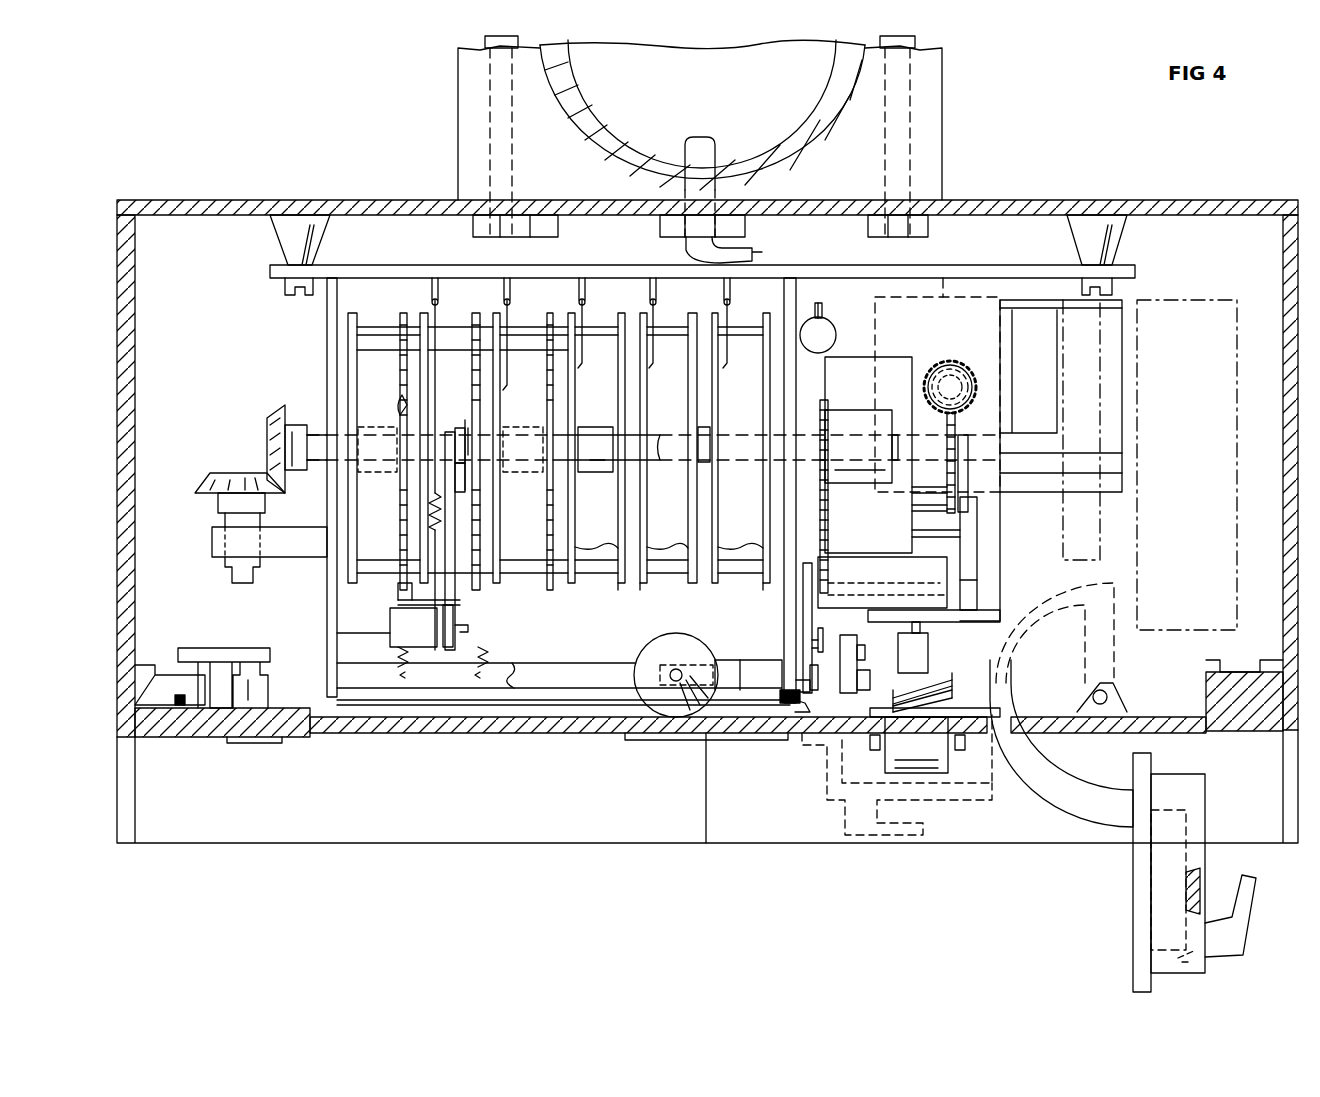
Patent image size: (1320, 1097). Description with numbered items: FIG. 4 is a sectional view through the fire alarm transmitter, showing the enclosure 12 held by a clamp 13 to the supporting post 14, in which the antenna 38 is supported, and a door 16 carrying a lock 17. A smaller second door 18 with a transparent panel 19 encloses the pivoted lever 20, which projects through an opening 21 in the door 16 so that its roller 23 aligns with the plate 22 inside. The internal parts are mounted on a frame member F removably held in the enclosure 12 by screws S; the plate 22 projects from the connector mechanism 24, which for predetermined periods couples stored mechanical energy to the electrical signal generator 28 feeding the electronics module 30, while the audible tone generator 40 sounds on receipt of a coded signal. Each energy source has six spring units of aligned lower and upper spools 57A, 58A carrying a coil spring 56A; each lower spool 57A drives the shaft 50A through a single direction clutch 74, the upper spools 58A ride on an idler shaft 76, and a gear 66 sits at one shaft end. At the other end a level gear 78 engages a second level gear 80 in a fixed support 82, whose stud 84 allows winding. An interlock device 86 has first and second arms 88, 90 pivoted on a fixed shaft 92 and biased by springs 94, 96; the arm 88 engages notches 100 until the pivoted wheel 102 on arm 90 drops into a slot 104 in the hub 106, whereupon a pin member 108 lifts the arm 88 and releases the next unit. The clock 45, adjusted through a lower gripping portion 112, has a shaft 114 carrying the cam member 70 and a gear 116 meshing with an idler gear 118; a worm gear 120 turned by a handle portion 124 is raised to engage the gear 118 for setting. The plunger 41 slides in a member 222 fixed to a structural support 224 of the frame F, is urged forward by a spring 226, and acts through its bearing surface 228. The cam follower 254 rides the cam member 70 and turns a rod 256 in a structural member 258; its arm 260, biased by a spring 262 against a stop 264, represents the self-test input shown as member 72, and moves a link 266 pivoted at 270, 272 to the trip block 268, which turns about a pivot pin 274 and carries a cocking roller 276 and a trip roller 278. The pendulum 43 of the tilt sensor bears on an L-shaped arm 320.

The enclosure 12 is at (1246, 193).
The clamp 13 is at (488, 98).
The supporting post 14 is at (577, 105).
The door 16 is at (522, 748).
The lock 17 is at (245, 745).
The second door 18 is at (935, 868).
The transparent panel 19 is at (1186, 893).
The pivoted lever 20 is at (940, 775).
The opening 21 is at (948, 705).
The plate 22 is at (872, 715).
The roller 23 is at (922, 740).
The connector mechanism 24 is at (1014, 580).
The electrical signal generator 28 is at (1034, 310).
The electronics module 30 is at (1215, 298).
The antenna 38 is at (702, 140).
The audible tone generator 40 is at (707, 750).
The plunger 41 is at (912, 690).
The pendulum 43 is at (626, 648).
The clock 45 is at (864, 346).
The shaft 50A is at (640, 440).
The coil spring 56A is at (498, 520).
The lower spool 57A is at (425, 313).
The upper spool 58A is at (692, 590).
The gear 66 is at (830, 420).
The cam member 70 is at (966, 460).
The member 72 is at (990, 562).
The single direction clutch 74 is at (390, 475).
The idler shaft 76 is at (703, 437).
The level gear 78 is at (275, 425).
The second level gear 80 is at (218, 475).
The fixed support 82 is at (212, 545).
The stud 84 is at (232, 578).
The interlock device 86 is at (448, 662).
The first arm 88 is at (398, 596).
The second arm 90 is at (455, 593).
The fixed shaft 92 is at (468, 629).
The spring 94 is at (398, 657).
The spring 96 is at (505, 312).
The notches 100 is at (400, 400).
The pivoted wheel 102 is at (458, 428).
The slot 104 is at (468, 418).
The hub 106 is at (470, 478).
The pin member 108 is at (460, 603).
The lower gripping portion 112 is at (812, 320).
The shaft 114 is at (950, 485).
The gear 116 is at (947, 498).
The idler gear 118 is at (947, 452).
The worm gear 120 is at (940, 365).
The handle portion 124 is at (962, 368).
The member 222 is at (945, 681).
The structural support 224 is at (316, 378).
The spring 226 is at (935, 690).
The bearing surface 228 is at (928, 640).
The cam follower 254 is at (977, 503).
The rod 256 is at (918, 577).
The structural member 258 is at (882, 560).
The arm 260 is at (825, 565).
The spring 262 is at (820, 688).
The stop 264 is at (965, 533).
The link 266 is at (818, 632).
The trip block 268 is at (850, 640).
The pivot connection 270 is at (812, 643).
The pivot connection 272 is at (828, 615).
The pivot pin 274 is at (805, 680).
The cocking roller 276 is at (879, 653).
The trip roller 278 is at (880, 684).
The L-shaped arm 320 is at (740, 650).
The frame member F is at (370, 265).
The screws S is at (285, 292).